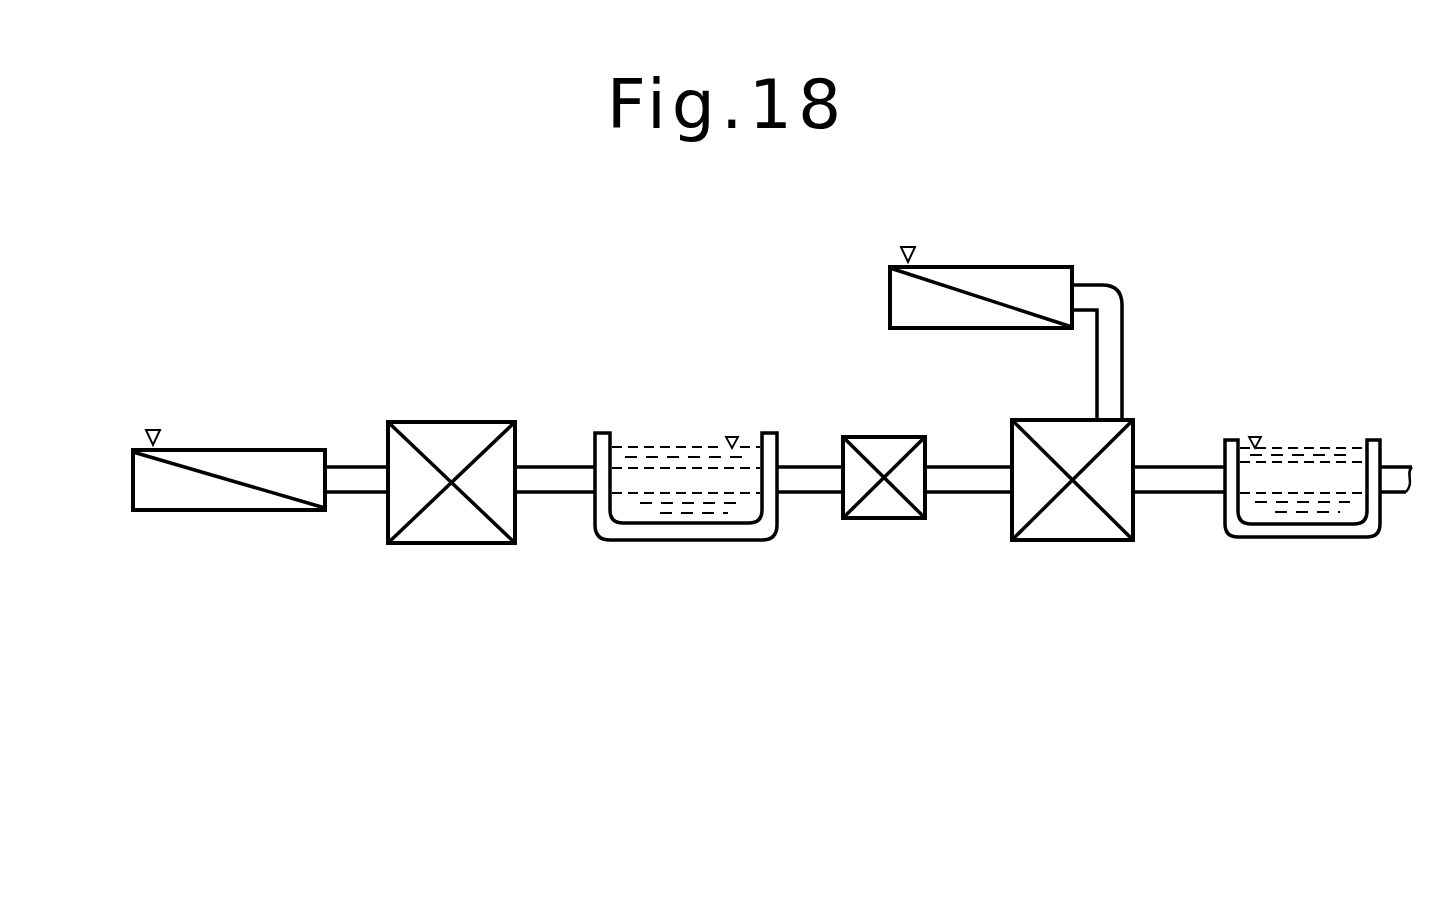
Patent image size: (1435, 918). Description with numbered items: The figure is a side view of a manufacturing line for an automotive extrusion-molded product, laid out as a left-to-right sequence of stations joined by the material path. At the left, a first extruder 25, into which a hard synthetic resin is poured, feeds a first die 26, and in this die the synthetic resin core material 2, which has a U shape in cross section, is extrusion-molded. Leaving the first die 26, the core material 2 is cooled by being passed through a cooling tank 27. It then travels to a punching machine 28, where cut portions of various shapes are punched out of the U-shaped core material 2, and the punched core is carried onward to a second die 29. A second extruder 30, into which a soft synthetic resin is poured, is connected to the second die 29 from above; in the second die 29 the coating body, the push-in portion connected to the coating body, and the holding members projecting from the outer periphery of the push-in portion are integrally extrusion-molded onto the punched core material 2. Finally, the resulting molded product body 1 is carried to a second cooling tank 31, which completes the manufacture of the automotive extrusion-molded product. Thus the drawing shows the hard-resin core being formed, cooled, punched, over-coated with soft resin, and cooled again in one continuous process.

The molded product body 1 is at (1395, 487).
The synthetic resin core material 2 is at (960, 480).
The first extruder 25 is at (243, 465).
The first die 26 is at (442, 525).
The cooling tank 27 is at (636, 442).
The punching machine 28 is at (882, 507).
The second die 29 is at (1072, 515).
The second extruder 30 is at (1015, 288).
The cooling tank 31 is at (1328, 443).